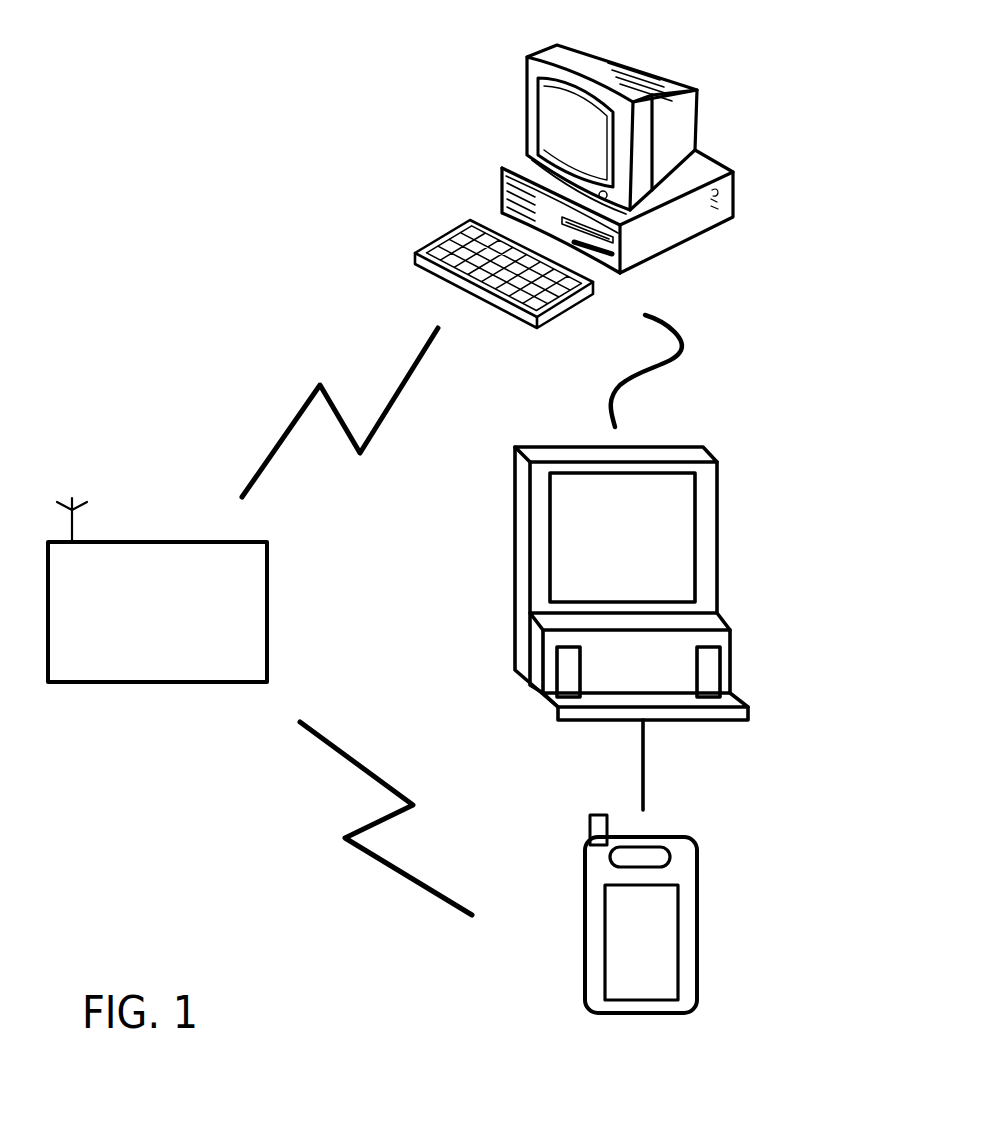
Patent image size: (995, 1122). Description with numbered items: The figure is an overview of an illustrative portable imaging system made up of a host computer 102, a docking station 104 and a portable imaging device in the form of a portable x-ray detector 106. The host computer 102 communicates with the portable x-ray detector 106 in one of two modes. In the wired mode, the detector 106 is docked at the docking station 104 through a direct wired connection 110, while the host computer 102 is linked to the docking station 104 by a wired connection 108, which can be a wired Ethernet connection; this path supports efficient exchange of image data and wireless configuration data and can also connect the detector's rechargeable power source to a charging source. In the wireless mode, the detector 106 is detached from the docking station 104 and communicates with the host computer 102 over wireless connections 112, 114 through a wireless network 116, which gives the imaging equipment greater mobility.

The host computer 102 is at (733, 185).
The docking station 104 is at (717, 527).
The portable x-ray detector 106 is at (697, 893).
The wired connection 108 is at (683, 350).
The wired connection 110 is at (645, 765).
The wireless connection 112 is at (388, 868).
The wireless connection 114 is at (300, 406).
The wireless network 116 is at (128, 682).